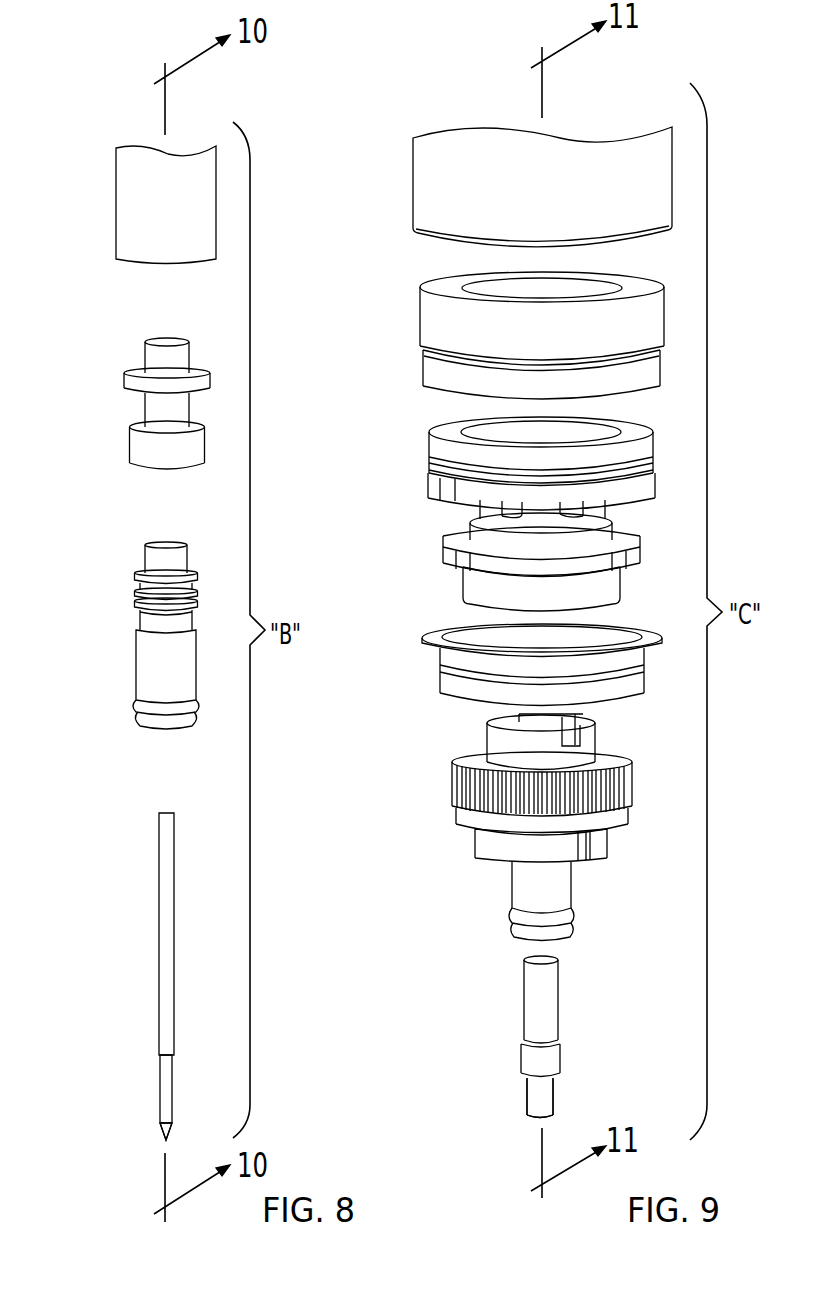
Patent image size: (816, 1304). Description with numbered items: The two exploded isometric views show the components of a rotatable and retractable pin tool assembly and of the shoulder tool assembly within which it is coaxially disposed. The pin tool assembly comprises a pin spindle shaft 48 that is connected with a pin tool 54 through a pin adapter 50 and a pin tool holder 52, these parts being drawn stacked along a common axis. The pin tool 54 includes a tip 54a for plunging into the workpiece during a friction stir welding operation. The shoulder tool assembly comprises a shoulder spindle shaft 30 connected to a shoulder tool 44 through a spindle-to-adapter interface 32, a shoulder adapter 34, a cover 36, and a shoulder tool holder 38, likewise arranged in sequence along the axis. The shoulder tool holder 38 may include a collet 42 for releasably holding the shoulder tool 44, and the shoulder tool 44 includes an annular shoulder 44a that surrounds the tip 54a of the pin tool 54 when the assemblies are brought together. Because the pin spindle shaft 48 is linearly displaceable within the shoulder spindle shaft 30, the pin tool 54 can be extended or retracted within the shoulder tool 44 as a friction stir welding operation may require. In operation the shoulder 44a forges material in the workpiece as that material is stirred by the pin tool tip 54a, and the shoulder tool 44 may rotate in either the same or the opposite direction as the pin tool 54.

In FIG. 9, the shoulder spindle shaft 30 is at (438, 193).
In FIG. 9, the spindle-to-adapter interface 32 is at (440, 333).
In FIG. 9, the shoulder adapter 34 is at (410, 412).
In FIG. 9, the cover 36 is at (455, 680).
In FIG. 9, the shoulder tool holder 38 is at (470, 787).
In FIG. 9, the collet 42 is at (530, 890).
In FIG. 9, the shoulder tool 44 is at (535, 1010).
In FIG. 9, the annular shoulder 44a is at (513, 1102).
In FIG. 8, the pin spindle shaft 48 is at (140, 216).
In FIG. 8, the pin adapter 50 is at (148, 440).
In FIG. 8, the pin tool holder 52 is at (150, 655).
In FIG. 8, the pin tool 54 is at (165, 917).
In FIG. 8, the tip 54a is at (157, 1133).